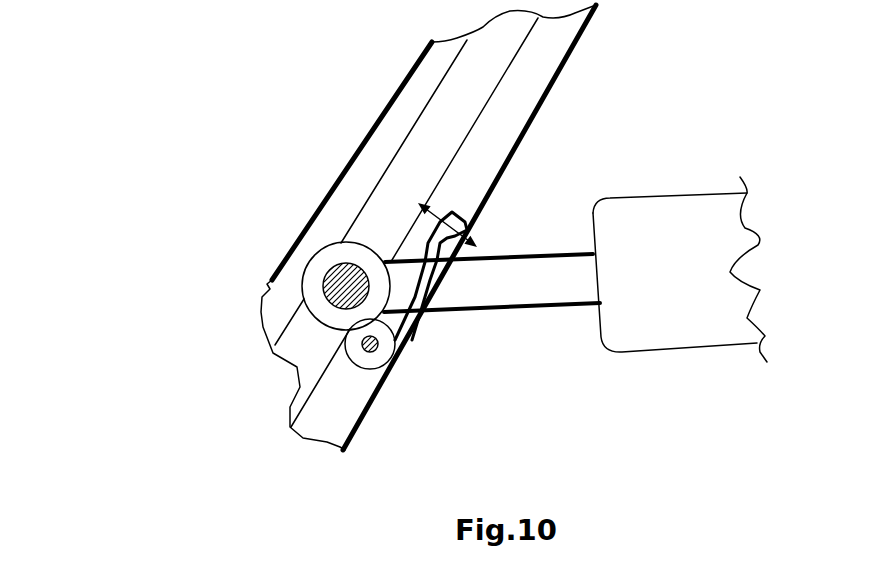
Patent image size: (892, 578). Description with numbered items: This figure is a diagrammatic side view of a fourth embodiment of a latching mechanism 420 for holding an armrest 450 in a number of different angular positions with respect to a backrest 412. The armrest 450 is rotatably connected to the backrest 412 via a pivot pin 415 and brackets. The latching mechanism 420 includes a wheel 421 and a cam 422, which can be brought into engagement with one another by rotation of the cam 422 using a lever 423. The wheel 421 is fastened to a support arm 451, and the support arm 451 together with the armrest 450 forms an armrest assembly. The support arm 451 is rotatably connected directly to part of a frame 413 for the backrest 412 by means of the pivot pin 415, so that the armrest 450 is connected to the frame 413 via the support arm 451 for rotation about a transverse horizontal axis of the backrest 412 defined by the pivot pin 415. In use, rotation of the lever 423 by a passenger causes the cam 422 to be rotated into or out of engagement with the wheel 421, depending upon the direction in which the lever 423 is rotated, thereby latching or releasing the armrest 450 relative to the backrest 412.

The backrest 412 is at (398, 74).
The frame 413 is at (405, 147).
The pivot pin 415 is at (328, 227).
The latching mechanism 420 is at (297, 336).
The wheel 421 is at (308, 264).
The cam 422 is at (380, 368).
The lever 423 is at (430, 280).
The armrest 450 is at (682, 347).
The support arm 451 is at (543, 307).